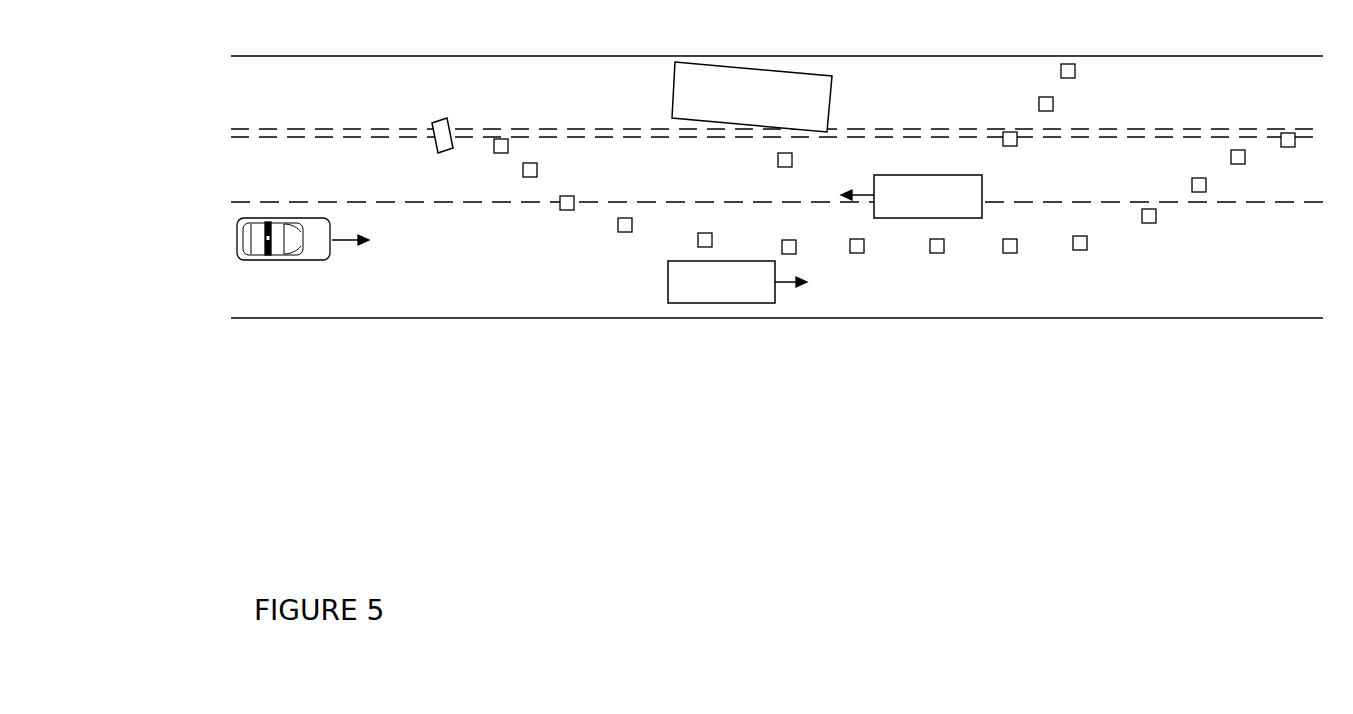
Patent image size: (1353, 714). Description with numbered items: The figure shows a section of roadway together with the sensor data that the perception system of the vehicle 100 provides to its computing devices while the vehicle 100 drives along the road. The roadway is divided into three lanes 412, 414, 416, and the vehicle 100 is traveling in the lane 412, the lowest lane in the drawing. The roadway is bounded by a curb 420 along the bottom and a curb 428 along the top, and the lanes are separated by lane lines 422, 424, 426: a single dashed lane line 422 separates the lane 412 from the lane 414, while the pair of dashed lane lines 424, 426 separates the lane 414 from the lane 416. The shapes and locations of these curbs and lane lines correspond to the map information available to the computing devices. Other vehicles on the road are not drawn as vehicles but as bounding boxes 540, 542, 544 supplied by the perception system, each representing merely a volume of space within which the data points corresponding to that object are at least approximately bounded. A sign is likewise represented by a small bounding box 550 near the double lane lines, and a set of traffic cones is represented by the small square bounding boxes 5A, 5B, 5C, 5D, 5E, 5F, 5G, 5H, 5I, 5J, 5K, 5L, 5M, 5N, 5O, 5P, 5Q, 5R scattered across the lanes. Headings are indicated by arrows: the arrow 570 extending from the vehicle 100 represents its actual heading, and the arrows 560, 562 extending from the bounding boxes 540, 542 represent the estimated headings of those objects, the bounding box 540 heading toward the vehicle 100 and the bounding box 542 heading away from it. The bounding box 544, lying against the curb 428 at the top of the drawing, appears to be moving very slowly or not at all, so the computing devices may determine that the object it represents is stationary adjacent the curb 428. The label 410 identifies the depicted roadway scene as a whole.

The vehicle 100 is at (275, 261).
The roadway environment 410 is at (321, 566).
The lane 412 is at (1149, 257).
The lane 414 is at (1149, 167).
The lane 416 is at (1149, 89).
The curb 420 is at (300, 318).
The lane line 422 is at (625, 203).
The lane line 424 is at (295, 137).
The lane line 426 is at (380, 130).
The curb 428 is at (305, 57).
The bounding box 540 is at (922, 219).
The bounding box 542 is at (668, 289).
The bounding box 544 is at (832, 102).
The bounding box 550 is at (448, 124).
The arrow 560 is at (842, 197).
The arrow 562 is at (806, 284).
The arrow 570 is at (369, 241).
The bounding box 5A is at (514, 147).
The bounding box 5B is at (542, 171).
The bounding box 5C is at (580, 204).
The bounding box 5D is at (638, 226).
The bounding box 5E is at (717, 241).
The bounding box 5F is at (801, 248).
The bounding box 5G is at (870, 247).
The bounding box 5H is at (950, 247).
The bounding box 5I is at (1019, 247).
The bounding box 5J is at (1089, 244).
The bounding box 5K is at (1163, 217).
The bounding box 5L is at (1212, 186).
The bounding box 5M is at (1252, 158).
The bounding box 5N is at (1301, 141).
The bounding box 5O is at (1081, 72).
The bounding box 5P is at (1058, 105).
The bounding box 5Q is at (1023, 140).
The bounding box 5R is at (798, 161).